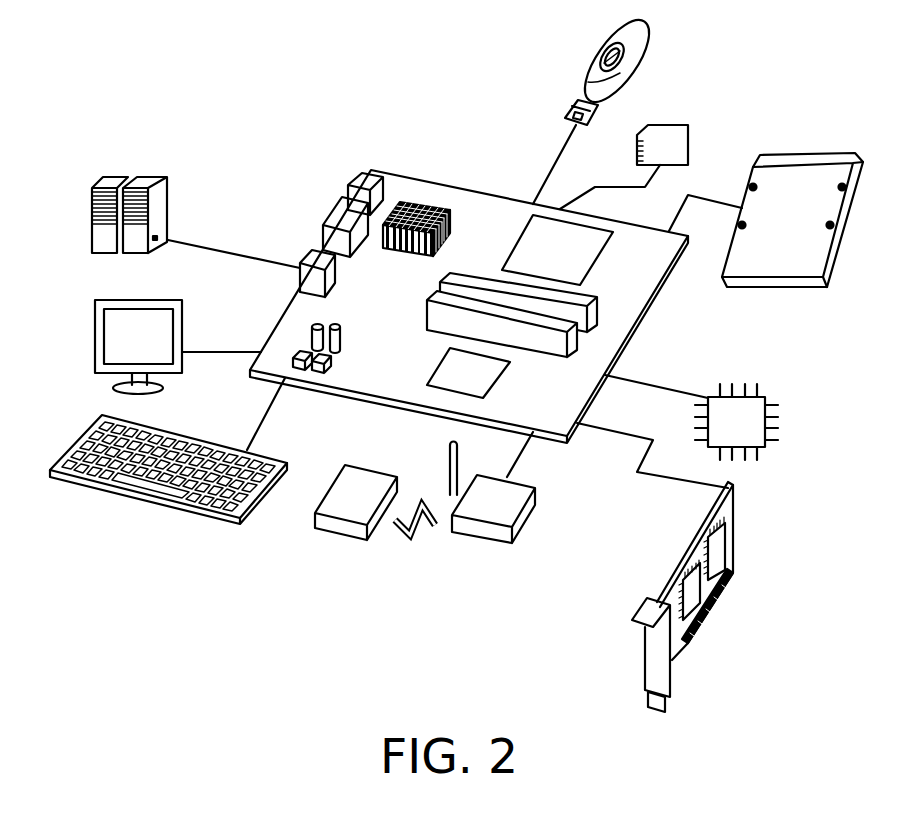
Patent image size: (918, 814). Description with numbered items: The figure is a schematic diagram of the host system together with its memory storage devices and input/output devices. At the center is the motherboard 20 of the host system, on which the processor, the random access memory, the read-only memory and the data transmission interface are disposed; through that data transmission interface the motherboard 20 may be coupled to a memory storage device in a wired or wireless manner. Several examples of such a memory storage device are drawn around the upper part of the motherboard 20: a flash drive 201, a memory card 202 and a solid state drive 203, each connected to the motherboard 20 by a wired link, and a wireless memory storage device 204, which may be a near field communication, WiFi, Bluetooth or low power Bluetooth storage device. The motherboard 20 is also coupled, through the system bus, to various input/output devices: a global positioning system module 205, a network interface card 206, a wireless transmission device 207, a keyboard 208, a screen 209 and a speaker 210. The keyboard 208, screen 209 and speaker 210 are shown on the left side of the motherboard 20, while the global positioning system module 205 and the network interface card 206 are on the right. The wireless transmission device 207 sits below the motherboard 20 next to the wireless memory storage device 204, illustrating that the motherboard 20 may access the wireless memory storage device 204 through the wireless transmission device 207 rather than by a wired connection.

The motherboard 20 is at (468, 212).
The flash drive 201 is at (594, 64).
The memory card 202 is at (690, 136).
The solid state drive 203 is at (810, 153).
The wireless memory storage device 204 is at (328, 482).
The global positioning system module 205 is at (776, 421).
The network interface card 206 is at (733, 542).
The wireless transmission device 207 is at (533, 525).
The keyboard 208 is at (173, 508).
The screen 209 is at (95, 354).
The speaker 210 is at (92, 240).